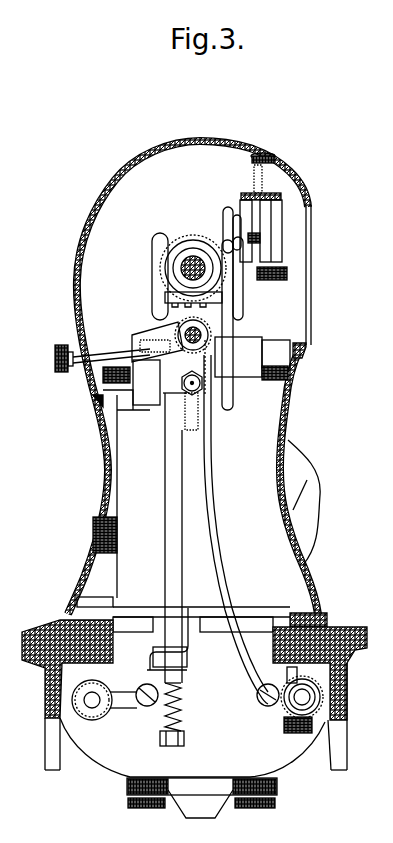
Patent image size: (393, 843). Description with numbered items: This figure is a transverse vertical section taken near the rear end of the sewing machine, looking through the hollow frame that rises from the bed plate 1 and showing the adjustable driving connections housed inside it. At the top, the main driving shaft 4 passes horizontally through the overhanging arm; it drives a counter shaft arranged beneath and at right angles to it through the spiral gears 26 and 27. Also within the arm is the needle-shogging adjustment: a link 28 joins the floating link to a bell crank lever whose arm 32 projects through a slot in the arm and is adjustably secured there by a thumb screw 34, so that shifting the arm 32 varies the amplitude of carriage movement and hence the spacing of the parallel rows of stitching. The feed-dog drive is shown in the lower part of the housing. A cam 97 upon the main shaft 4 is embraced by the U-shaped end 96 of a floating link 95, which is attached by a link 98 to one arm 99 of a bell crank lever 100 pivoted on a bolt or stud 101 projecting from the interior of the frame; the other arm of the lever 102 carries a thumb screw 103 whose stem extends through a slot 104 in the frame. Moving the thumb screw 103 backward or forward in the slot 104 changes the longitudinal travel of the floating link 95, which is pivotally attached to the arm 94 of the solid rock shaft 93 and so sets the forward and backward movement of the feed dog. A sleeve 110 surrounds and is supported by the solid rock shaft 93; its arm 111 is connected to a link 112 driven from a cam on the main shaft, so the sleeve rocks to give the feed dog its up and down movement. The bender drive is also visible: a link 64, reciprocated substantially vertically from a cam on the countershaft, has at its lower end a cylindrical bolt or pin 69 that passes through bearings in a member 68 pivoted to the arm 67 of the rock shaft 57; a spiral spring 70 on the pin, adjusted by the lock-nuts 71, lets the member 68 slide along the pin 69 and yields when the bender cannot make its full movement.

The bed plate 1 is at (345, 628).
The main driving shaft 4 is at (184, 265).
The spiral gear 26 is at (166, 298).
The spiral gear 27 is at (193, 432).
The link 28 is at (243, 218).
The arm 32 is at (284, 214).
The thumb screw 34 is at (273, 160).
The rock shaft 57 is at (95, 704).
The link 64 is at (165, 515).
The arm 67 is at (120, 692).
The member 68 is at (152, 655).
The cylindrical bolt or pin 69 is at (180, 658).
The spiral spring 70 is at (181, 712).
The lock-nuts 71 is at (181, 743).
The solid rock shaft 93 is at (303, 698).
The arm 94 is at (290, 701).
The floating link 95 is at (211, 563).
The U-shaped end 96 is at (237, 303).
The cam 97 is at (200, 240).
The link 98 is at (206, 395).
The arm 99 is at (193, 364).
The bell crank lever 100 is at (190, 337).
The bolt or stud 101 is at (213, 335).
The arm of the lever 102 is at (143, 343).
The thumb screw 103 is at (56, 357).
The slot 104 is at (80, 318).
The sleeve 110 is at (328, 683).
The arm 111 is at (266, 706).
The link 112 is at (252, 698).